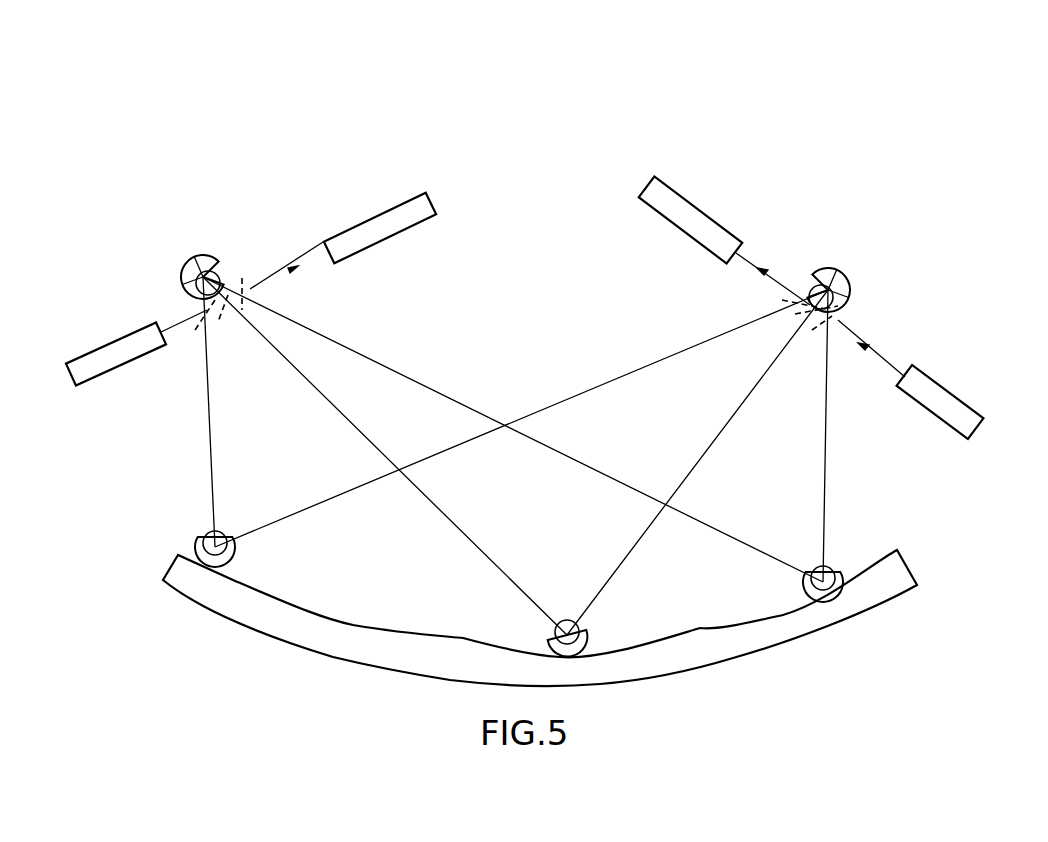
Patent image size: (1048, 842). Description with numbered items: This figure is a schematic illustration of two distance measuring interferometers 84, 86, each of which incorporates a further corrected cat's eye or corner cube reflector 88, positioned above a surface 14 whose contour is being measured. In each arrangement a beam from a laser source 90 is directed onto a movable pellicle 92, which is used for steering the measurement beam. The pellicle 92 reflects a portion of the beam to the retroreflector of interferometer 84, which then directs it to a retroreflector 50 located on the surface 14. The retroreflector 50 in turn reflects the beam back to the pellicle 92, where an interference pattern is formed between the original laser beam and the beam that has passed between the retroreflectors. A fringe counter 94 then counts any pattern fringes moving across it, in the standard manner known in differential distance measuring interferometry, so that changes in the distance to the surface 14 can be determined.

The surface 14 is at (353, 625).
The retroreflector 50 is at (193, 542).
The interferometer 84 is at (160, 271).
The interferometer 86 is at (878, 286).
The corrected cat's eye or corner cube reflector 88 is at (826, 282).
The laser source 90 is at (110, 370).
The movable pellicle 92 is at (841, 318).
The fringe counter 94 is at (436, 204).